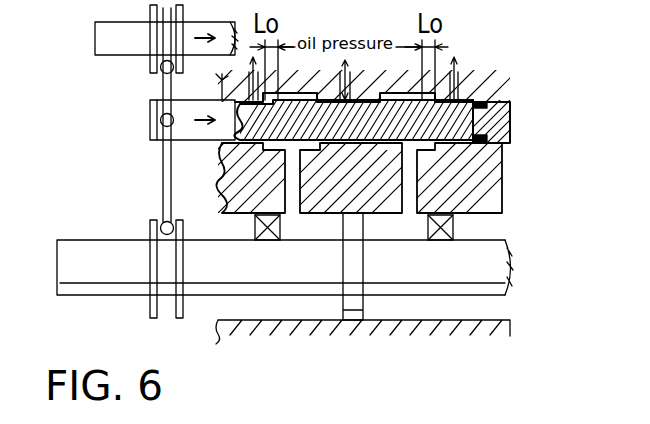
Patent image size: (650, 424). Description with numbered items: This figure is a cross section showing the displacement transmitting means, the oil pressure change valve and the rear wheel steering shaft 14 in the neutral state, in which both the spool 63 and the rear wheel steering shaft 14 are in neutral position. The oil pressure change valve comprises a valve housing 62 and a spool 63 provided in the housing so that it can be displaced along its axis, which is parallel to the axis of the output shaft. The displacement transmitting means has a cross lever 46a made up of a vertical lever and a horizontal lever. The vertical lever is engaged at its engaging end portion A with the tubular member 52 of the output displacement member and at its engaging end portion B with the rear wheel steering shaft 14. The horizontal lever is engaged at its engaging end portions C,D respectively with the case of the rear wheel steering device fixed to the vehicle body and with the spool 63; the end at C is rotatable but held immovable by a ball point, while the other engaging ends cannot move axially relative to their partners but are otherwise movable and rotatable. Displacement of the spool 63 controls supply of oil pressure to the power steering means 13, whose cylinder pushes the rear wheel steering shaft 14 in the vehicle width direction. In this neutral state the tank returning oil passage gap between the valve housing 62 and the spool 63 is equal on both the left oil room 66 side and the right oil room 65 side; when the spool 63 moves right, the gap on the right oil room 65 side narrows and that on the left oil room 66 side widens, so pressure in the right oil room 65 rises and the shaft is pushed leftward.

The tubular member 52 is at (100, 33).
The engaging end portion A is at (152, 68).
The engaging end portions C,D is at (150, 120).
The cross lever 46a is at (158, 185).
The engaging end portion B is at (152, 226).
The valve housing 62 is at (500, 70).
The spool 63 is at (504, 120).
The rear wheel steering shaft 14 is at (508, 254).
The left oil room 66 is at (297, 312).
The power steering means 13 is at (320, 314).
The right oil room 65 is at (402, 320).